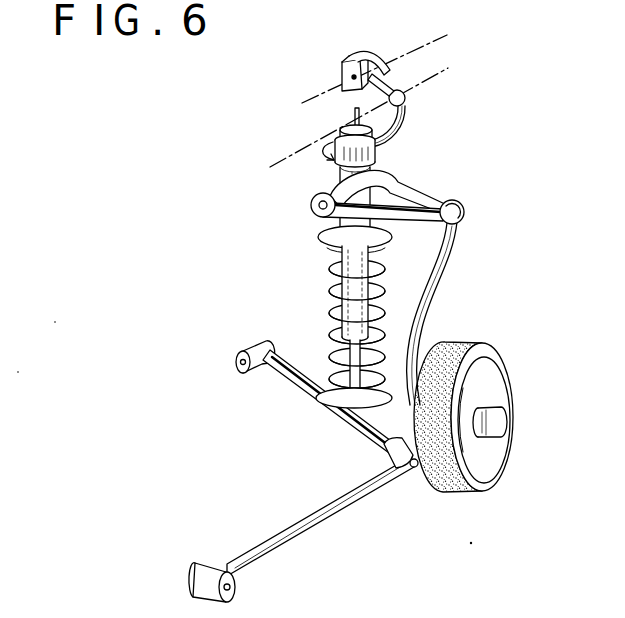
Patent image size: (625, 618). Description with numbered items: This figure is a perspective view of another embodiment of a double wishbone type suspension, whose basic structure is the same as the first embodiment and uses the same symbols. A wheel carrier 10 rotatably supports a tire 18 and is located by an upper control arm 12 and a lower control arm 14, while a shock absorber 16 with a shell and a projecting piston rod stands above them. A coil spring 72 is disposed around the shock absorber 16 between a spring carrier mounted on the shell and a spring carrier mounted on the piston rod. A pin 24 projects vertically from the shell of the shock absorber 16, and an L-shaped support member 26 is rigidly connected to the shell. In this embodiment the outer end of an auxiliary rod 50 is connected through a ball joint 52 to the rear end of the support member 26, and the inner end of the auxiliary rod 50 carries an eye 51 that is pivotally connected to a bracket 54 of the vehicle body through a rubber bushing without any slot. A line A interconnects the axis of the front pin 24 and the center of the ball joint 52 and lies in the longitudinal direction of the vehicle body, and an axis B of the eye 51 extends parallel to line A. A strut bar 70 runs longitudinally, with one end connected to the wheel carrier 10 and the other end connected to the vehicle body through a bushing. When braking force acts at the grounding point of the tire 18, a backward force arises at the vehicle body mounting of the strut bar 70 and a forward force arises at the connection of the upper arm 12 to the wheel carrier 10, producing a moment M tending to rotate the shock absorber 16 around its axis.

The wheel carrier 10 is at (428, 280).
The upper control arm 12 is at (392, 190).
The lower control arm 14 is at (286, 378).
The shock absorber 16 is at (345, 266).
The tire 18 is at (470, 346).
The pin 24 is at (353, 108).
The support member 26 is at (402, 117).
The auxiliary rod 50 is at (383, 70).
The eye 51 is at (368, 56).
The ball joint 52 is at (403, 91).
The bracket 54 is at (345, 60).
The strut bar 70 is at (351, 497).
The coil spring 72 is at (355, 181).
The line A is at (446, 72).
The axis B is at (440, 40).
The moment M is at (318, 157).